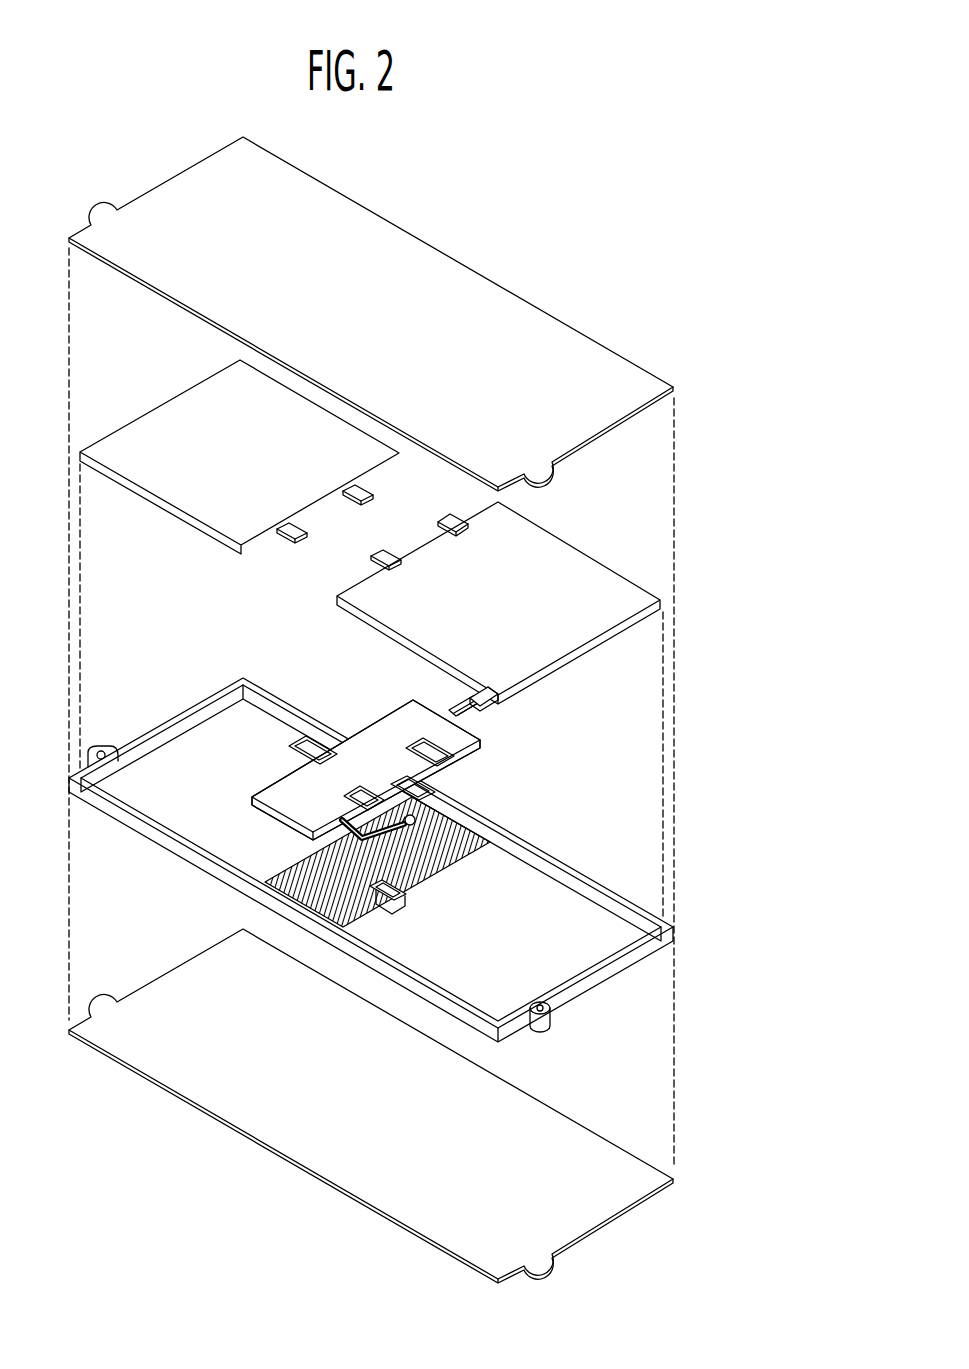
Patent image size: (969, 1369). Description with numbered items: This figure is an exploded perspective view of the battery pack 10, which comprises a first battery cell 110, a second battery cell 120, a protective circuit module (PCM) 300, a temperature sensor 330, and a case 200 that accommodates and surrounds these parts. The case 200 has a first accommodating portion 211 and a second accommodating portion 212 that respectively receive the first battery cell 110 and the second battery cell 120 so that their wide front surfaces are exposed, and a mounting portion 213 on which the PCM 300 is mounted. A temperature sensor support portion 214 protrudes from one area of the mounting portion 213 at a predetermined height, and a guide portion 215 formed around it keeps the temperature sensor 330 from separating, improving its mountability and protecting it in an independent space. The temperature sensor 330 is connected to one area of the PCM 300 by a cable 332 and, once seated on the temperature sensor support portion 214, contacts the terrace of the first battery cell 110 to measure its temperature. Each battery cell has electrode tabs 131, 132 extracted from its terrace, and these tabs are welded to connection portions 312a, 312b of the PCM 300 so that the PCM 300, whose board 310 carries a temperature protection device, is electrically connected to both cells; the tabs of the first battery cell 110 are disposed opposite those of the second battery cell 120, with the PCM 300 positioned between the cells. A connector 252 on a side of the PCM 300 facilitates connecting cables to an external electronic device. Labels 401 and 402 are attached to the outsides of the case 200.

The battery pack 10 is at (504, 175).
The label 401 is at (546, 326).
The label 402 is at (600, 1143).
The second battery cell 120 is at (175, 412).
The first battery cell 110 is at (592, 558).
The first electrode tab 131 is at (292, 528).
The second electrode tab 132 is at (356, 490).
The case 200 is at (371, 841).
The first accommodating portion 211 is at (548, 918).
The second accommodating portion 212 is at (195, 770).
The mounting portion 213 is at (282, 872).
The temperature sensor support portion 214 is at (402, 907).
The guide portion 215 is at (398, 897).
The protective circuit module 300 is at (393, 745).
The board 310 is at (405, 714).
The connection portion 312a is at (428, 750).
The connection portion 312b is at (408, 792).
The connector 252 is at (495, 712).
The temperature sensor 330 is at (422, 865).
The cable 332 is at (402, 832).